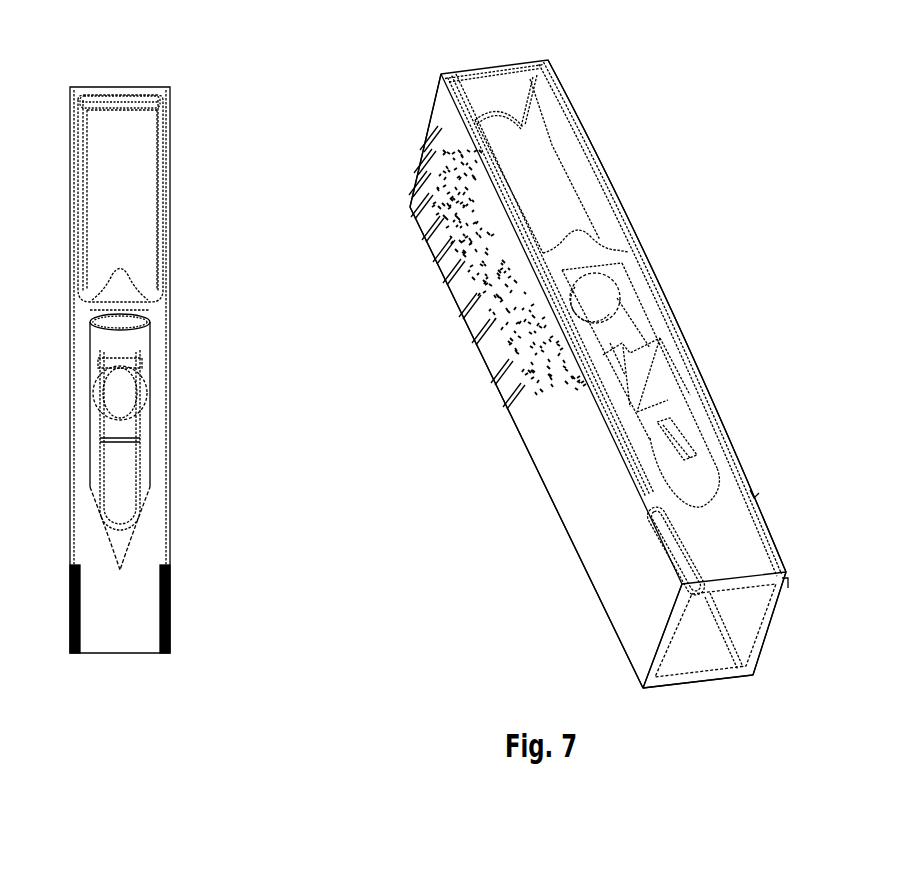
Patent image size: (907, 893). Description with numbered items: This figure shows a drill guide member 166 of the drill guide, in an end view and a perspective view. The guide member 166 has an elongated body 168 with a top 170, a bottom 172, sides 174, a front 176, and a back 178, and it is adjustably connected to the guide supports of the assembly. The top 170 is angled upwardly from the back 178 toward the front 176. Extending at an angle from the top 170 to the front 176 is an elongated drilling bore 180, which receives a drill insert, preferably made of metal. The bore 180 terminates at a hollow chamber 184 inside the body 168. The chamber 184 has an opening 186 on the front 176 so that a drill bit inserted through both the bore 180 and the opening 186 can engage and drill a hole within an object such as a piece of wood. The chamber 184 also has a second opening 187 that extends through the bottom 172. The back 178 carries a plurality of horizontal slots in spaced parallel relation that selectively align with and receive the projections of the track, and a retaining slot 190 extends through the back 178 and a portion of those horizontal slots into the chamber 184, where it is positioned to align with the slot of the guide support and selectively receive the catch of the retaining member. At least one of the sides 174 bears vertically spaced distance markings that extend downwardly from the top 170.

The guide member 166 is at (652, 130).
The elongated body 168 is at (666, 284).
The top 170 is at (425, 137).
The bottom 172 is at (773, 628).
The sides 174 is at (585, 525).
The front 176 is at (733, 492).
The back 178 is at (527, 447).
The elongated drilling bore 180 is at (595, 286).
The hollow chamber 184 is at (650, 398).
The opening 186 is at (680, 397).
The opening 187 is at (708, 660).
The retaining slot 190 is at (138, 393).